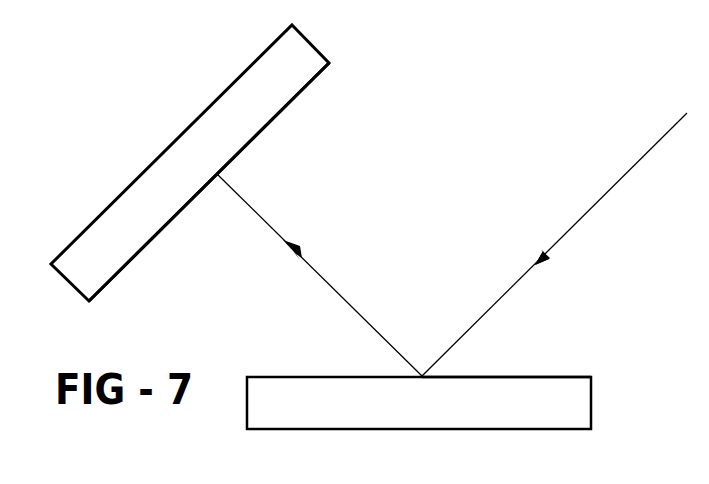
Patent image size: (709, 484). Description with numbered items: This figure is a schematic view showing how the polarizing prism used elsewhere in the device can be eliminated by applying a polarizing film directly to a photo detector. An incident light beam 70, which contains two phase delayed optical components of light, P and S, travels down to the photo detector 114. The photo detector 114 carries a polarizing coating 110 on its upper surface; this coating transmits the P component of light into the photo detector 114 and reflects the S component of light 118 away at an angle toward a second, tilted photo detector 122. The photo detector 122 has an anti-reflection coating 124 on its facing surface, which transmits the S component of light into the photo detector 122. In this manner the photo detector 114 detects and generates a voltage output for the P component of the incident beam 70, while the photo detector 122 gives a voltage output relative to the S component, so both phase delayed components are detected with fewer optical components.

The incident light beam 70 is at (637, 165).
The polarizing coating 110 is at (575, 377).
The photo detector 114 is at (505, 398).
The S component of light 118 is at (330, 285).
The photo detector 122 is at (285, 63).
The anti-reflection coating 124 is at (270, 119).